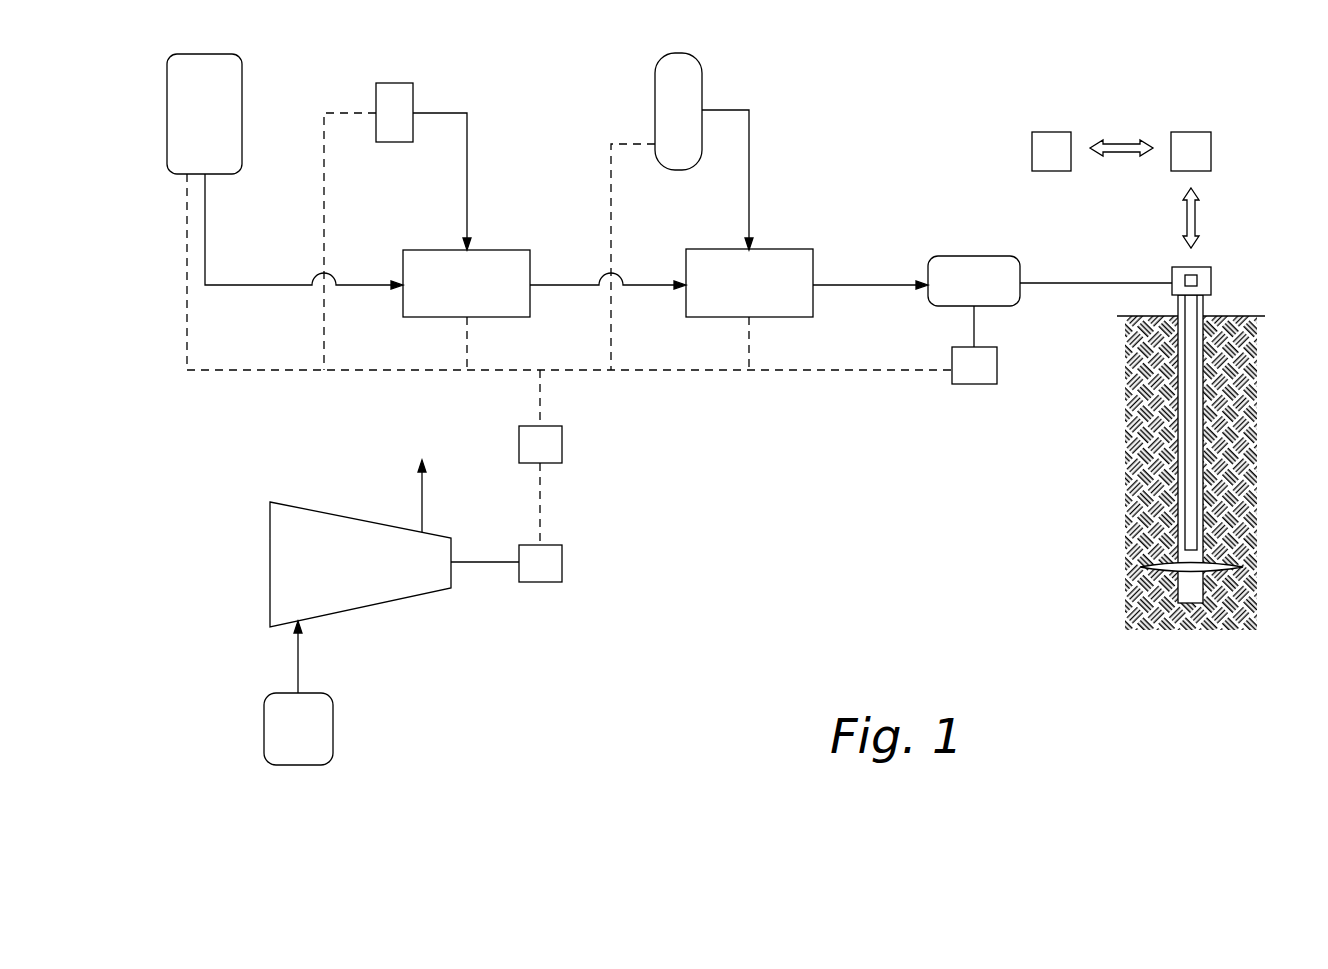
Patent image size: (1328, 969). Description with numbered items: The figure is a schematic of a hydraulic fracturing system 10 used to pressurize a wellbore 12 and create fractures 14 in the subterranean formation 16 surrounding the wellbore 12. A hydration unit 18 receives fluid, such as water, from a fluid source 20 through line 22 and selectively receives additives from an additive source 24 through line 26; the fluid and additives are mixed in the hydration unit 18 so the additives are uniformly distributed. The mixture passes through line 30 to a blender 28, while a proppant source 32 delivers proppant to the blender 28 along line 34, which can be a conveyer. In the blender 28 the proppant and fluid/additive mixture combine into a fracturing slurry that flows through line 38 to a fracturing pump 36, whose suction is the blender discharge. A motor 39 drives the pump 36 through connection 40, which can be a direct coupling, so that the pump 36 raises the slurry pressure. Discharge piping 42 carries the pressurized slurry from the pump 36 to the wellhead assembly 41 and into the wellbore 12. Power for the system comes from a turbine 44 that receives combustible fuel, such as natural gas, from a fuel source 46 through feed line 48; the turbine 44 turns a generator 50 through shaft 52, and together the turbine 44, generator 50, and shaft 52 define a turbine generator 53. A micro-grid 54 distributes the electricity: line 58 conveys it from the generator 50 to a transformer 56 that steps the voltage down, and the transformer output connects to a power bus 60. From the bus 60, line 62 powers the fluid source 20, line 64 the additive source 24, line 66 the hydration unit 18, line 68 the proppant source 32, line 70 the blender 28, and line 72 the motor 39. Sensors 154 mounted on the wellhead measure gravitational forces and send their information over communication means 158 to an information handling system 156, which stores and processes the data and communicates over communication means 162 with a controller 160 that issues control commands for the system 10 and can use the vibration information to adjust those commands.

The hydraulic fracturing system 10 is at (1166, 72).
The wellbore 12 is at (1205, 372).
The fractures 14 is at (1215, 567).
The subterranean formation 16 is at (1238, 452).
The hydration unit 18 is at (506, 250).
The fluid source 20 is at (167, 107).
The line 22 is at (253, 285).
The additive source 24 is at (397, 83).
The line 26 is at (445, 113).
The blender 28 is at (785, 249).
The line 30 is at (566, 285).
The proppant source 32 is at (655, 92).
The line 34 is at (780, 110).
The fracturing pump 36 is at (975, 256).
The line 38 is at (873, 285).
The motor 39 is at (975, 384).
The connection 40 is at (974, 322).
The wellhead assembly 41 is at (1232, 255).
The discharge piping 42 is at (1117, 283).
The turbine 44 is at (270, 553).
The fuel source 46 is at (264, 730).
The feed line 48 is at (298, 663).
The generator 50 is at (562, 561).
The shaft 52 is at (489, 562).
The turbine generator 53 is at (522, 632).
The micro-grid 54 is at (740, 552).
The transformer 56 is at (562, 444).
The line 58 is at (543, 498).
The power bus 60 is at (253, 370).
The line 62 is at (187, 347).
The line 64 is at (324, 347).
The line 66 is at (467, 345).
The line 68 is at (611, 345).
The line 70 is at (749, 345).
The line 72 is at (880, 370).
The sensors 154 is at (1197, 280).
The information handling system 156 is at (1211, 150).
The communication means 158 is at (1199, 212).
The controller 160 is at (1032, 150).
The communication means 162 is at (1121, 146).